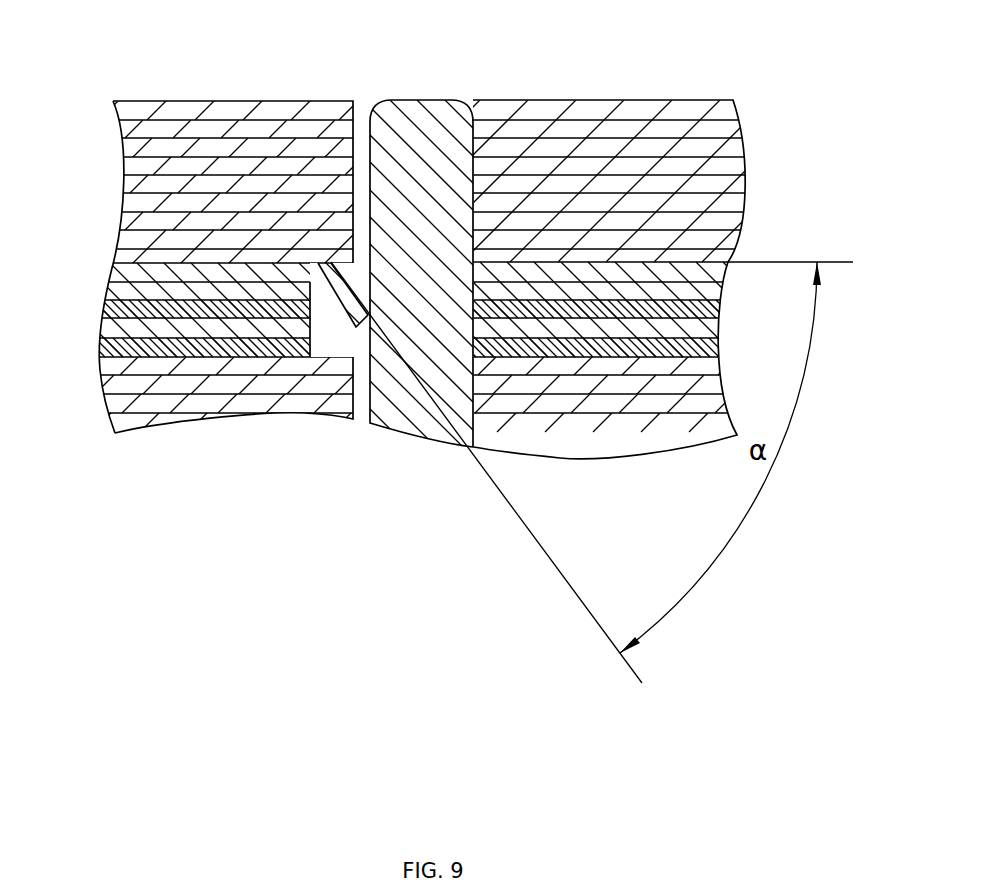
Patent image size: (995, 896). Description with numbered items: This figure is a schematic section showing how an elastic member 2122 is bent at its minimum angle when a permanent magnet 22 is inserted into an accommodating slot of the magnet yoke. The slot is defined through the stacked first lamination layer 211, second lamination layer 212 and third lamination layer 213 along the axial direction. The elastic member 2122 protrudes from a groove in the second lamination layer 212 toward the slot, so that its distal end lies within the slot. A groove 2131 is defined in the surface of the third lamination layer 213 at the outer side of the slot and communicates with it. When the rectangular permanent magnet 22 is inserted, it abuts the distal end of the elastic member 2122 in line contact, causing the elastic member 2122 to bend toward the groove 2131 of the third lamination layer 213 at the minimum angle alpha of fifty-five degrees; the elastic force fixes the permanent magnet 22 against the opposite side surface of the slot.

The permanent magnet 22 is at (418, 113).
The first lamination layer 211 is at (157, 178).
The second lamination layer 212 is at (193, 272).
The elastic member 2122 is at (352, 322).
The third lamination layer 213 is at (186, 320).
The groove 2131 is at (323, 312).